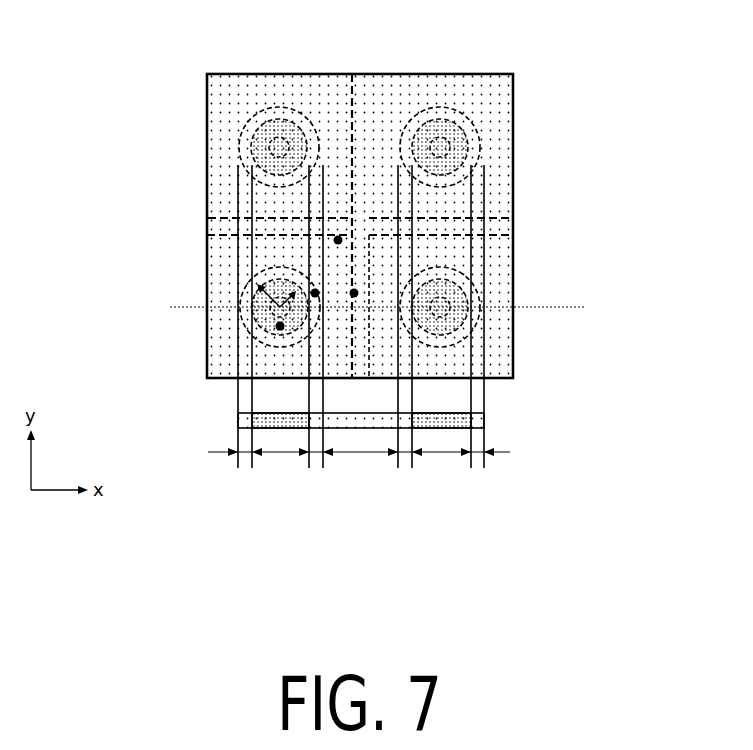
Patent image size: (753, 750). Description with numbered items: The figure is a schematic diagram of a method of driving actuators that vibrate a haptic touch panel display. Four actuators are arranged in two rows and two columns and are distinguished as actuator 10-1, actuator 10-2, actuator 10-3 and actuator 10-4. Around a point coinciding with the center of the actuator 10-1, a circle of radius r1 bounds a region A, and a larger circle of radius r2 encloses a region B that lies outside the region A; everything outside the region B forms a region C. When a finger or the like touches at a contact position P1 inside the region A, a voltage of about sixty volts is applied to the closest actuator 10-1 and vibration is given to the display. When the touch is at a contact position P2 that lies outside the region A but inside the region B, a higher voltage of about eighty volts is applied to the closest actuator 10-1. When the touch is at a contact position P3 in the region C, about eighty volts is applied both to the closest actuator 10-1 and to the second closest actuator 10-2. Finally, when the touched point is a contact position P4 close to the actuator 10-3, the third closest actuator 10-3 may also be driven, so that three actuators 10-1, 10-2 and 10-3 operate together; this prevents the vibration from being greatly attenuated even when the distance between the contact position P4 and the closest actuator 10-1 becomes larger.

The actuator 10-1 is at (280, 307).
The actuator 10-2 is at (440, 307).
The actuator 10-3 is at (279, 147).
The actuator 10-4 is at (440, 147).
The contact position P1 is at (280, 326).
The contact position P2 is at (315, 293).
The contact position P3 is at (355, 293).
The contact position P4 is at (338, 240).
The radius r1 is at (275, 298).
The radius r2 is at (295, 292).
The region A is at (359, 470).
The region B is at (247, 457).
The region C is at (358, 470).